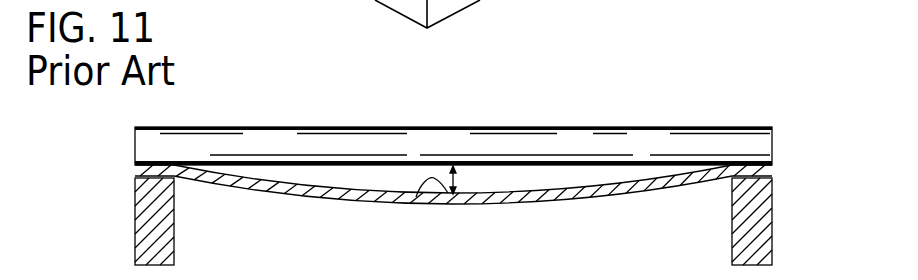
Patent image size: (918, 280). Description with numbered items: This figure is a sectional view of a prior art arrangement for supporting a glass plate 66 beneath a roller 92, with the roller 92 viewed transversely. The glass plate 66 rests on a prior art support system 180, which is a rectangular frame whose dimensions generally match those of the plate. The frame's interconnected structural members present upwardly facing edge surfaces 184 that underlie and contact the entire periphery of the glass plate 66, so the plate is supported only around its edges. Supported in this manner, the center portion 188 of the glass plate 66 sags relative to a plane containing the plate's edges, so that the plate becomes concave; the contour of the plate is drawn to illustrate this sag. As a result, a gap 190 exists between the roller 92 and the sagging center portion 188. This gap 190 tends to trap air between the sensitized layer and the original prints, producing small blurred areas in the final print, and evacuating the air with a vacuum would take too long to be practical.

The roller 92 is at (344, 127).
The glass plate 66 is at (360, 203).
The glass plate support system 180 is at (174, 223).
The upwardly facing edge surfaces 184 is at (141, 157).
The center portion 188 is at (416, 197).
The gap 190 is at (456, 172).